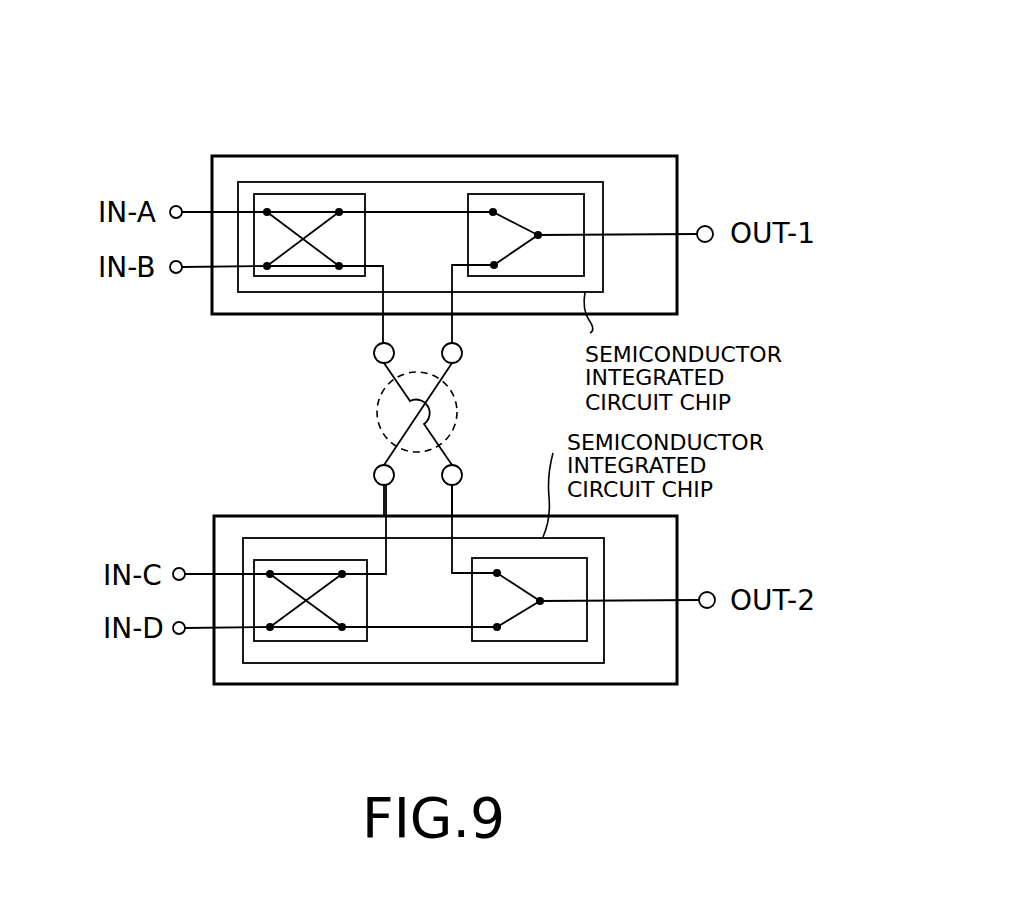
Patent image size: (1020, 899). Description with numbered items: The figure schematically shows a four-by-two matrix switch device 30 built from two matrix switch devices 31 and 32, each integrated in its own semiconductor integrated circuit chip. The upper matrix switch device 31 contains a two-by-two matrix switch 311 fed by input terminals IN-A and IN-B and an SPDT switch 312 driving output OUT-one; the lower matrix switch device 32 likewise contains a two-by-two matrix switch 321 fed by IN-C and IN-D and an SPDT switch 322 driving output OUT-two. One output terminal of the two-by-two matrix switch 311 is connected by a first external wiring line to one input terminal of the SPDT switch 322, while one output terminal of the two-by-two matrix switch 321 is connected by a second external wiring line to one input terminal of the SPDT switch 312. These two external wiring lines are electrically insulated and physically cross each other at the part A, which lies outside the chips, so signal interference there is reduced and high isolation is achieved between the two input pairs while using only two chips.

The 4×2 matrix switch device 30 is at (612, 124).
The matrix switch device 31 is at (378, 182).
The 2×2 matrix switch 311 is at (300, 194).
The SPDT switch 312 is at (540, 194).
The matrix switch device 32 is at (400, 685).
The 2×2 matrix switch 321 is at (303, 641).
The SPDT switch 322 is at (532, 641).
The part A is at (377, 410).